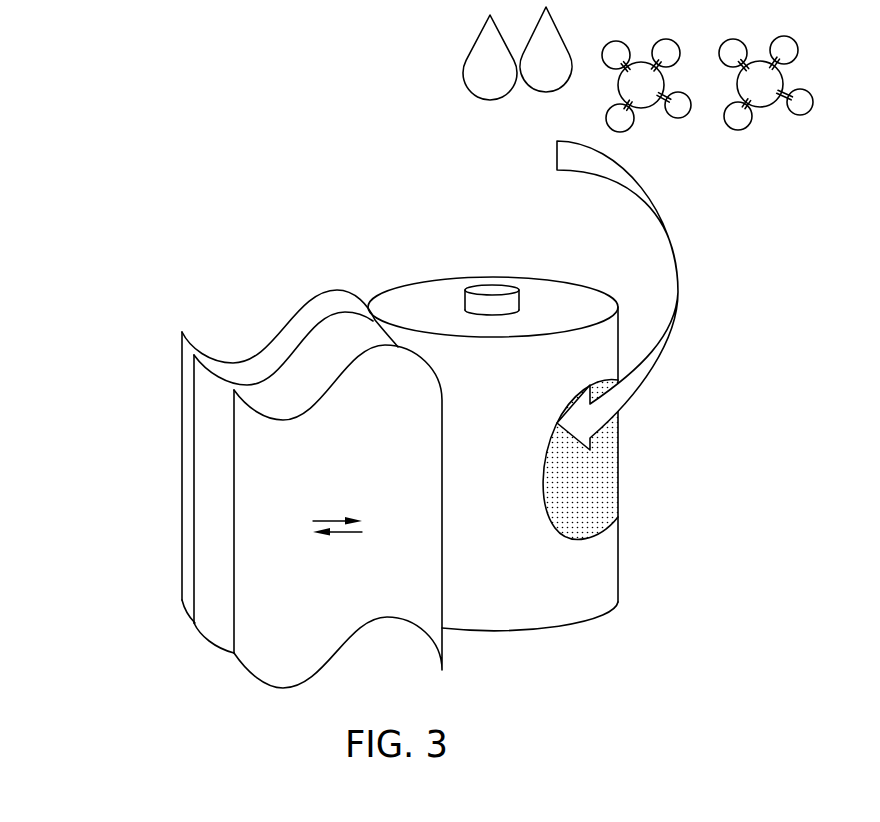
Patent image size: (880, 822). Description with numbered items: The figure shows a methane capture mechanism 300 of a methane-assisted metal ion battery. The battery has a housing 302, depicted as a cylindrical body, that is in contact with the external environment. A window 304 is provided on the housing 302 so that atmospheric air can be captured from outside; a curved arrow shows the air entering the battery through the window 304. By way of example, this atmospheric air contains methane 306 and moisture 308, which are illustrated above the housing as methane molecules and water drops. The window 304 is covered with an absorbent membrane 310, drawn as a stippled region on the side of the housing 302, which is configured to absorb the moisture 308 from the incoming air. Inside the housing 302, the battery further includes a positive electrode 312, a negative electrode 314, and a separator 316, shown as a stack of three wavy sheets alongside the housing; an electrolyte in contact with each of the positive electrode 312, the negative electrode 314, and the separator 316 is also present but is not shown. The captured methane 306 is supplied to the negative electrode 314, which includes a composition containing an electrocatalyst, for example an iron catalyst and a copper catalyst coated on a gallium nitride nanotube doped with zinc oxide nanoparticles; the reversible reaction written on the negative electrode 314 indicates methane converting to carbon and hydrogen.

The methane capture mechanism 300 is at (146, 83).
The housing 302 is at (597, 583).
The window 304 is at (596, 537).
The methane 306 is at (780, 162).
The moisture 308 is at (588, 133).
The absorbent membrane 310 is at (607, 473).
The positive electrode 312 is at (188, 441).
The negative electrode 314 is at (258, 668).
The separator 316 is at (208, 548).